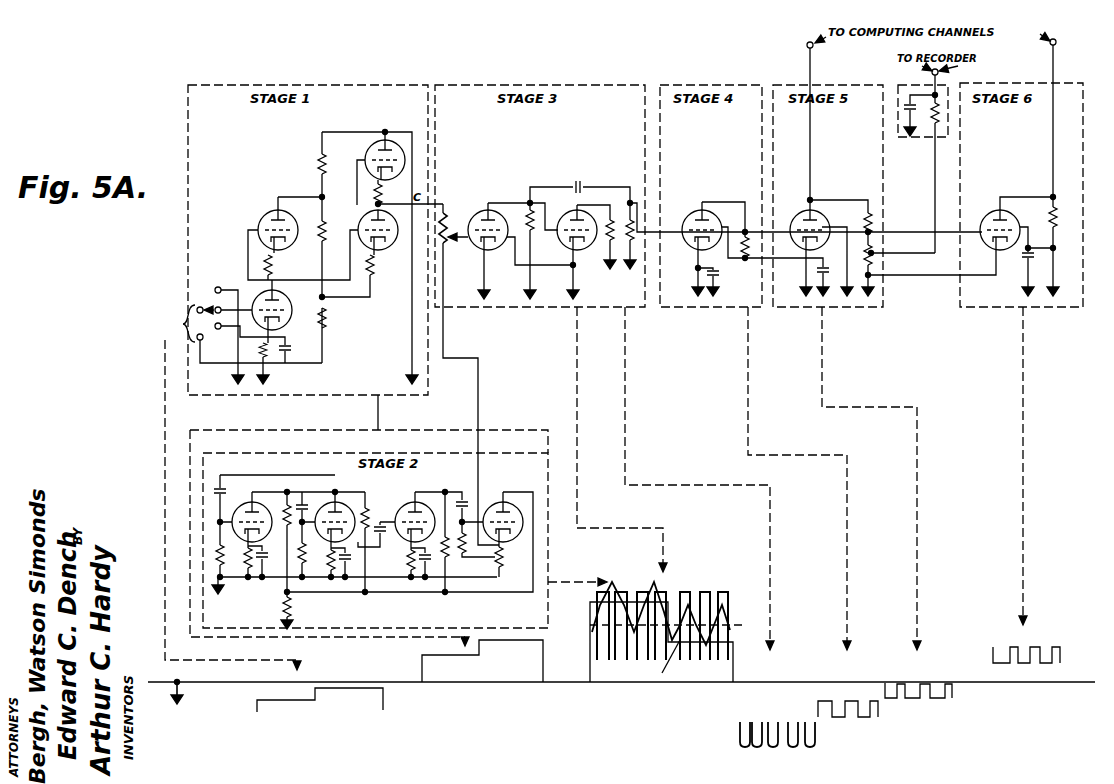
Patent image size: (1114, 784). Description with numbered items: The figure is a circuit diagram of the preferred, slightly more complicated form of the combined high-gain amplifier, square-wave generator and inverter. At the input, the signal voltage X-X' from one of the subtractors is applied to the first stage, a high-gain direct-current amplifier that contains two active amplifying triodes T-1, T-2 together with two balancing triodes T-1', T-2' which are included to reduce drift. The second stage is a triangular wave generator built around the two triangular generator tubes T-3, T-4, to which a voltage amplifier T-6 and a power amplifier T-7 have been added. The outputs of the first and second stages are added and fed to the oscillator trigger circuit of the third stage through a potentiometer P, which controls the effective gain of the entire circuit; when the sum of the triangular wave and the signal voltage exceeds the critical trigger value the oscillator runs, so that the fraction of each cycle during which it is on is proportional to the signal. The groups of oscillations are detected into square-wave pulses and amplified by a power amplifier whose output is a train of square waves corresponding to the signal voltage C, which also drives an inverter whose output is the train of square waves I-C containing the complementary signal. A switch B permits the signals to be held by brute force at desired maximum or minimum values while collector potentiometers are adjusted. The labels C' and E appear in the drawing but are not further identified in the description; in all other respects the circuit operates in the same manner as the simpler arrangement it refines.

The active amplifying triode T-1 is at (266, 307).
The balancing triode T-1' is at (267, 227).
The active amplifying triode T-2 is at (366, 227).
The balancing triode T-2' is at (375, 155).
The triangular generator tube T-3 is at (249, 517).
The triangular generator tube T-4 is at (333, 516).
The voltage amplifier T-6 is at (411, 516).
The power amplifier T-7 is at (503, 515).
The switch B is at (210, 297).
The signal voltage X-X' is at (172, 323).
The potentiometer P is at (450, 223).
The signal voltage c C is at (804, 121).
The terminal C' to recorder C' is at (920, 82).
The recorder coupling network E is at (923, 169).
The inverted signal (1-c) I-C is at (1039, 118).